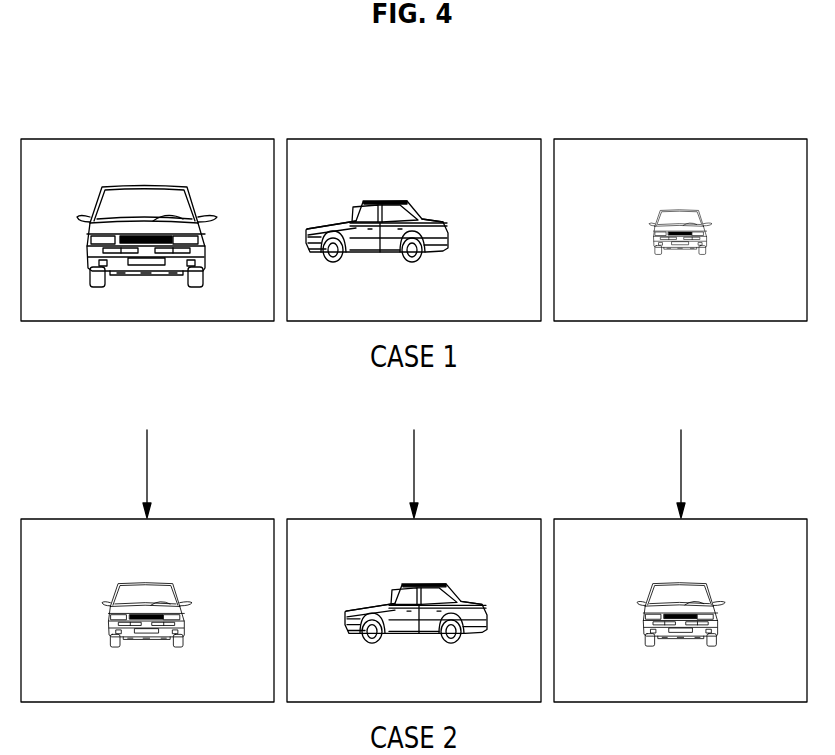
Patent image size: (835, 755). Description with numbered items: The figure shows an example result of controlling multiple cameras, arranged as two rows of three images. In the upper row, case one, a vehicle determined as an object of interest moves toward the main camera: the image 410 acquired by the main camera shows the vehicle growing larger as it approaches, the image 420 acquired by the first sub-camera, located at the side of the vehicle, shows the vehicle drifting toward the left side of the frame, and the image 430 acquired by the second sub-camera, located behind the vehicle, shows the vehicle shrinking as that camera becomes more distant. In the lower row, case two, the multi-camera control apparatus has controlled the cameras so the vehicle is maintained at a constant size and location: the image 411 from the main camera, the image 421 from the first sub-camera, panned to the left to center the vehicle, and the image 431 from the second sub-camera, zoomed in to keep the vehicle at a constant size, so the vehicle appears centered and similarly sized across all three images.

The image 410 is at (147, 139).
The image 420 is at (414, 139).
The image 430 is at (680, 139).
The image 411 is at (193, 519).
The image 421 is at (460, 519).
The image 431 is at (727, 519).